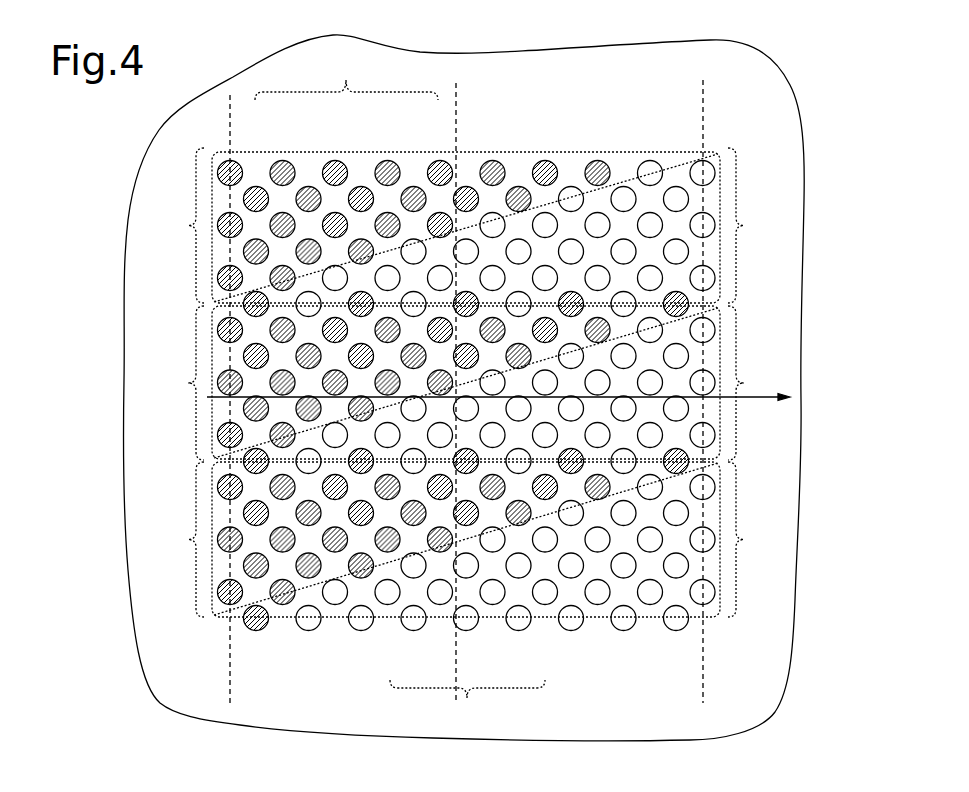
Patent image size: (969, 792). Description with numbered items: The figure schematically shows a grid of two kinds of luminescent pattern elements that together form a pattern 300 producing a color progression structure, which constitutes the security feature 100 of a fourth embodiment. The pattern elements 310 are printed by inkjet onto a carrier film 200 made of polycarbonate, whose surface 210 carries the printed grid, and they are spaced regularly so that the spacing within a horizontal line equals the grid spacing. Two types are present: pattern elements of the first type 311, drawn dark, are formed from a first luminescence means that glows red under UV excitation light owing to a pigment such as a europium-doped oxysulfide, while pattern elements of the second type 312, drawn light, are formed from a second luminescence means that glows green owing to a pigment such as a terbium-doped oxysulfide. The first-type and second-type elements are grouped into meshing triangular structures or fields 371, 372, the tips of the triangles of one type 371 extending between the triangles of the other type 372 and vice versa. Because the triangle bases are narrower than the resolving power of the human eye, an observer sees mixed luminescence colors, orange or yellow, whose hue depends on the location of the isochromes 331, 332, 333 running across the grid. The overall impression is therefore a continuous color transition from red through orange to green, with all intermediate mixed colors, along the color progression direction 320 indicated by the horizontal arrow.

The security feature 100 is at (526, 389).
The carrier film 200 is at (793, 97).
The substrate surface 210 is at (784, 170).
The pattern 300 is at (526, 389).
The pattern elements 310 is at (400, 389).
The pattern elements of the first type 311 is at (398, 160).
The pattern elements of the second type 312 is at (546, 645).
The color progression direction 320 is at (722, 400).
The isochrome 331 is at (233, 668).
The isochrome 332 is at (457, 665).
The isochrome 333 is at (705, 690).
The triangular structure of the first type 371 is at (171, 382).
The triangular structure of the second type 372 is at (758, 382).